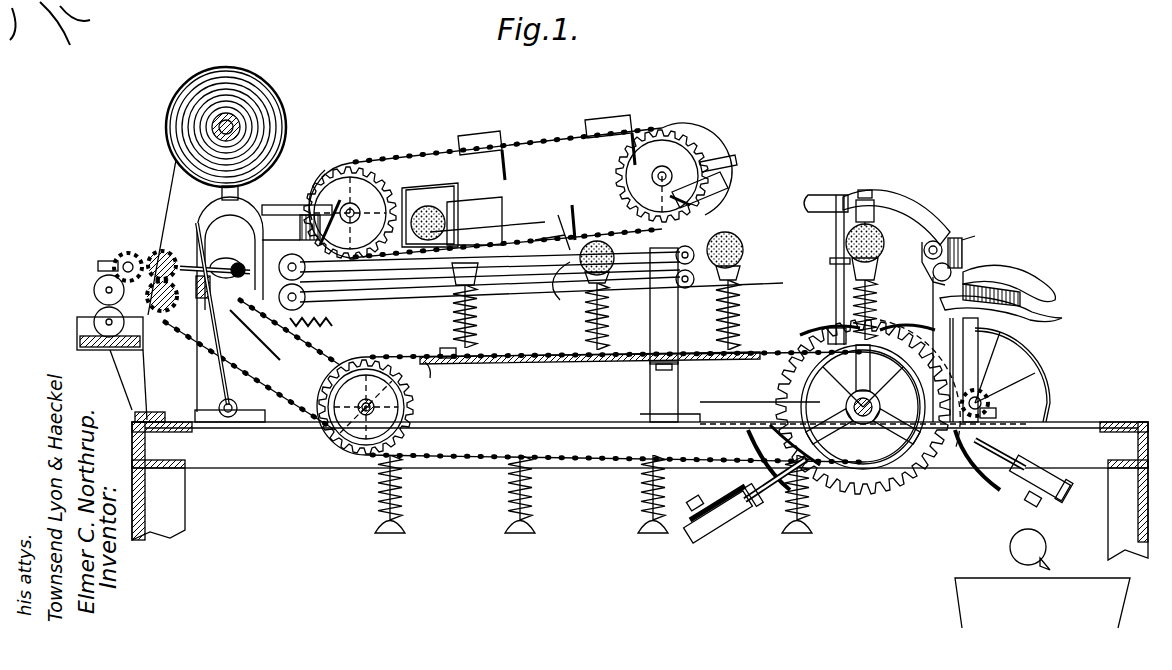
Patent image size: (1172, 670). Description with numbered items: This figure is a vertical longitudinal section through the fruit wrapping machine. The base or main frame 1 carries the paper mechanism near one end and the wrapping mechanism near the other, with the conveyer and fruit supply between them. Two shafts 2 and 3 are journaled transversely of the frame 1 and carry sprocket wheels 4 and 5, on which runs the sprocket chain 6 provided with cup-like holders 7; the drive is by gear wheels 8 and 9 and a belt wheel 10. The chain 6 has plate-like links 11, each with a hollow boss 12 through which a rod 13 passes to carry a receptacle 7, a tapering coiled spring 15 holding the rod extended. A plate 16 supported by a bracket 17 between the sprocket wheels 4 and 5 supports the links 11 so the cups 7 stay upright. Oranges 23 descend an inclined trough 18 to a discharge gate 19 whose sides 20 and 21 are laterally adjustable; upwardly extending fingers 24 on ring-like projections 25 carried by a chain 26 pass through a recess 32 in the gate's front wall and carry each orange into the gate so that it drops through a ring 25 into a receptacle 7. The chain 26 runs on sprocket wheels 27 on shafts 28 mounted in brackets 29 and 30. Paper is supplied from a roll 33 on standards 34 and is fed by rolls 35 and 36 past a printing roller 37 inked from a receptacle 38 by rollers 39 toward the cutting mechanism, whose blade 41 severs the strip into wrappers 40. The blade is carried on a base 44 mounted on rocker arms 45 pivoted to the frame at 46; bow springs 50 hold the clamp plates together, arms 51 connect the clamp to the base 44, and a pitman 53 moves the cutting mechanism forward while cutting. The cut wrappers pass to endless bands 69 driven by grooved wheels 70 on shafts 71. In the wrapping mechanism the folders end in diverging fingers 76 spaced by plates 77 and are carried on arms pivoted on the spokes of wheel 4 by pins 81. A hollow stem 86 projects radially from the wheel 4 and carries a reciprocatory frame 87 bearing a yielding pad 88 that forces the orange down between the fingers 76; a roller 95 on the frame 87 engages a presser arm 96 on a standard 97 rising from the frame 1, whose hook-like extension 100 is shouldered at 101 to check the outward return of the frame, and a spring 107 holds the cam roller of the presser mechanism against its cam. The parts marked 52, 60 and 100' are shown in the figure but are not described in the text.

The base or main frame 1 is at (246, 460).
The shaft 2 is at (850, 404).
The shaft 3 is at (366, 415).
The sprocket wheel 4 is at (780, 408).
The sprocket wheel 5 is at (352, 430).
The sprocket chain 6 is at (482, 490).
The cup-like holder 7 is at (396, 535).
The gear wheel 8 is at (925, 340).
The gear wheel 9 is at (980, 392).
The belt wheel 10 is at (1040, 364).
The plate-like link 11 is at (488, 358).
The boss or projection 12 is at (450, 360).
The rod or stem 13 is at (404, 490).
The coiled spring 15 is at (404, 504).
The plate 16 is at (562, 362).
The bracket 17 is at (652, 372).
The inclined trough 18 is at (440, 195).
The discharge gate 19 is at (510, 222).
The side of gate 20 is at (480, 212).
The side of gate 21 is at (322, 180).
The orange 23 is at (432, 205).
The finger 24 is at (504, 152).
The rim-like projection 25 is at (480, 135).
The chain 26 is at (560, 221).
The sprocket wheel 27 is at (690, 150).
The shaft 28 is at (350, 210).
The bracket 29 is at (678, 323).
The bracket 30 is at (290, 207).
The recess 32 is at (548, 200).
The roll of paper 33 is at (180, 100).
The standard 34 is at (222, 195).
The roll 35 is at (163, 252).
The roll 36 is at (163, 312).
The roller 37 is at (118, 255).
The receptacle 38 is at (77, 322).
The roller 39 is at (90, 315).
The wrapper 40 is at (440, 270).
The blade 41 is at (230, 304).
The base or support 44 is at (240, 322).
The rocker arm 45 is at (216, 370).
The pivot 46 is at (219, 406).
The bow spring 50 is at (219, 280).
The arm or projection 51 is at (346, 222).
The cam 52 is at (229, 262).
The pitman or link 53 is at (305, 342).
The link 60 is at (433, 381).
The endless band 69 is at (568, 284).
The grooved wheel 70 is at (308, 290).
The shaft 71 is at (306, 302).
The diverging finger 76 is at (830, 296).
The plate or blade 77 is at (460, 280).
The pin 81 is at (830, 372).
The hollow post or stem 86 is at (836, 232).
The reciprocatory frame 87 is at (862, 200).
The pad 88 is at (872, 200).
The roller 95 is at (810, 208).
The presser arm 96 is at (897, 223).
The standard 97 is at (945, 248).
The hook-like extension 100 is at (1009, 272).
The chute 100' is at (1019, 309).
The shoulder 101 is at (963, 247).
The spring 107 is at (830, 330).